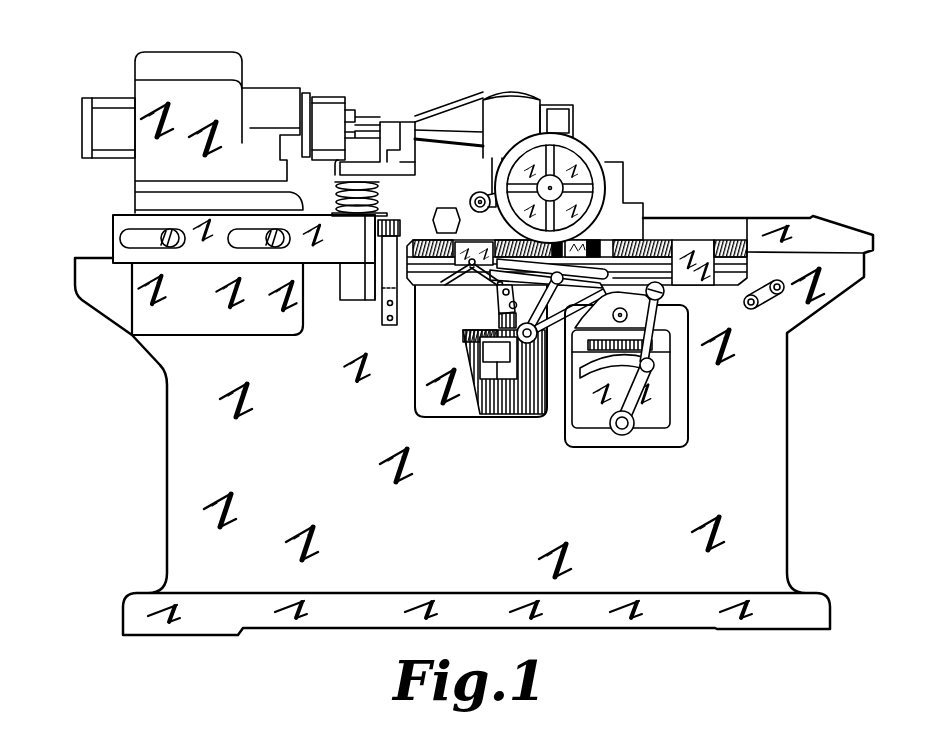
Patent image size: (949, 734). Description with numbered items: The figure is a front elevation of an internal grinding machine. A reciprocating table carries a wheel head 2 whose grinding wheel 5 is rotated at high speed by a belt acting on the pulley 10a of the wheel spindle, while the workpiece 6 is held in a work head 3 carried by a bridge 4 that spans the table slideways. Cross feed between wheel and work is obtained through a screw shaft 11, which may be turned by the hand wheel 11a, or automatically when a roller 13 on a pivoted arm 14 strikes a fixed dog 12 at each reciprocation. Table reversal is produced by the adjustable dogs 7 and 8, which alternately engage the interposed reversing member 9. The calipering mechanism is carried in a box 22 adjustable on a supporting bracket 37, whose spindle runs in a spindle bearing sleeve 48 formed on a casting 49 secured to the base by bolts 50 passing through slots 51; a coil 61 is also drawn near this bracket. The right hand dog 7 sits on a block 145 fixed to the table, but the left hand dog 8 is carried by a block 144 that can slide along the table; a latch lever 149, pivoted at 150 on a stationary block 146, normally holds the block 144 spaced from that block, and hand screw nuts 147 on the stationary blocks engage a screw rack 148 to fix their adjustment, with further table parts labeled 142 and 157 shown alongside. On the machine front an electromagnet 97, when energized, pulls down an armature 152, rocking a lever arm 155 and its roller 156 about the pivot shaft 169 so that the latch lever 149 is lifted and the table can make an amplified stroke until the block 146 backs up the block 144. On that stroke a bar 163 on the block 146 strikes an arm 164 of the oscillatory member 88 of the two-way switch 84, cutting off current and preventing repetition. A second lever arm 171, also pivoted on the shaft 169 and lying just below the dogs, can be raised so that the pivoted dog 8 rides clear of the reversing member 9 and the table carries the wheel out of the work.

The wheel head 2 is at (530, 103).
The work head 3 is at (270, 90).
The bridge 4 is at (143, 204).
The grinding wheel 5 is at (360, 118).
The workpiece 6 is at (352, 110).
The dog 7 is at (680, 281).
The dog 8 is at (619, 327).
The reversing member 9 is at (633, 257).
The pulley 10a is at (560, 112).
The screw shaft 11 is at (553, 186).
The hand wheel 11a is at (600, 180).
The fixed dog 12 is at (458, 242).
The roller 13 is at (473, 196).
The pivoted arm 14 is at (492, 194).
The box 22 is at (397, 125).
The supporting bracket 37 is at (405, 175).
The spindle bearing sleeve 48 is at (357, 290).
The casting 49 is at (203, 259).
The bolts 50 is at (150, 247).
The slots 51 is at (145, 231).
The spring 61 is at (337, 200).
The two-way switch 84 is at (502, 298).
The oscillatory member 88 is at (507, 311).
The electromagnet 97 is at (490, 364).
The table plate 142 is at (760, 234).
The block 144 is at (583, 239).
The block 145 is at (716, 243).
The block 146 is at (436, 214).
The hand screw nuts 147 is at (446, 285).
The screw rack 148 is at (650, 243).
The latch lever 149 is at (572, 259).
The pivot 150 is at (472, 266).
The armature 152 is at (516, 333).
The lever arm 155 is at (543, 303).
The roller 156 is at (570, 310).
The slide rail 157 is at (615, 278).
The bar 163 is at (518, 245).
The arm 164 is at (512, 241).
The pivot shaft 169 is at (518, 338).
The lever arm 171 is at (564, 350).